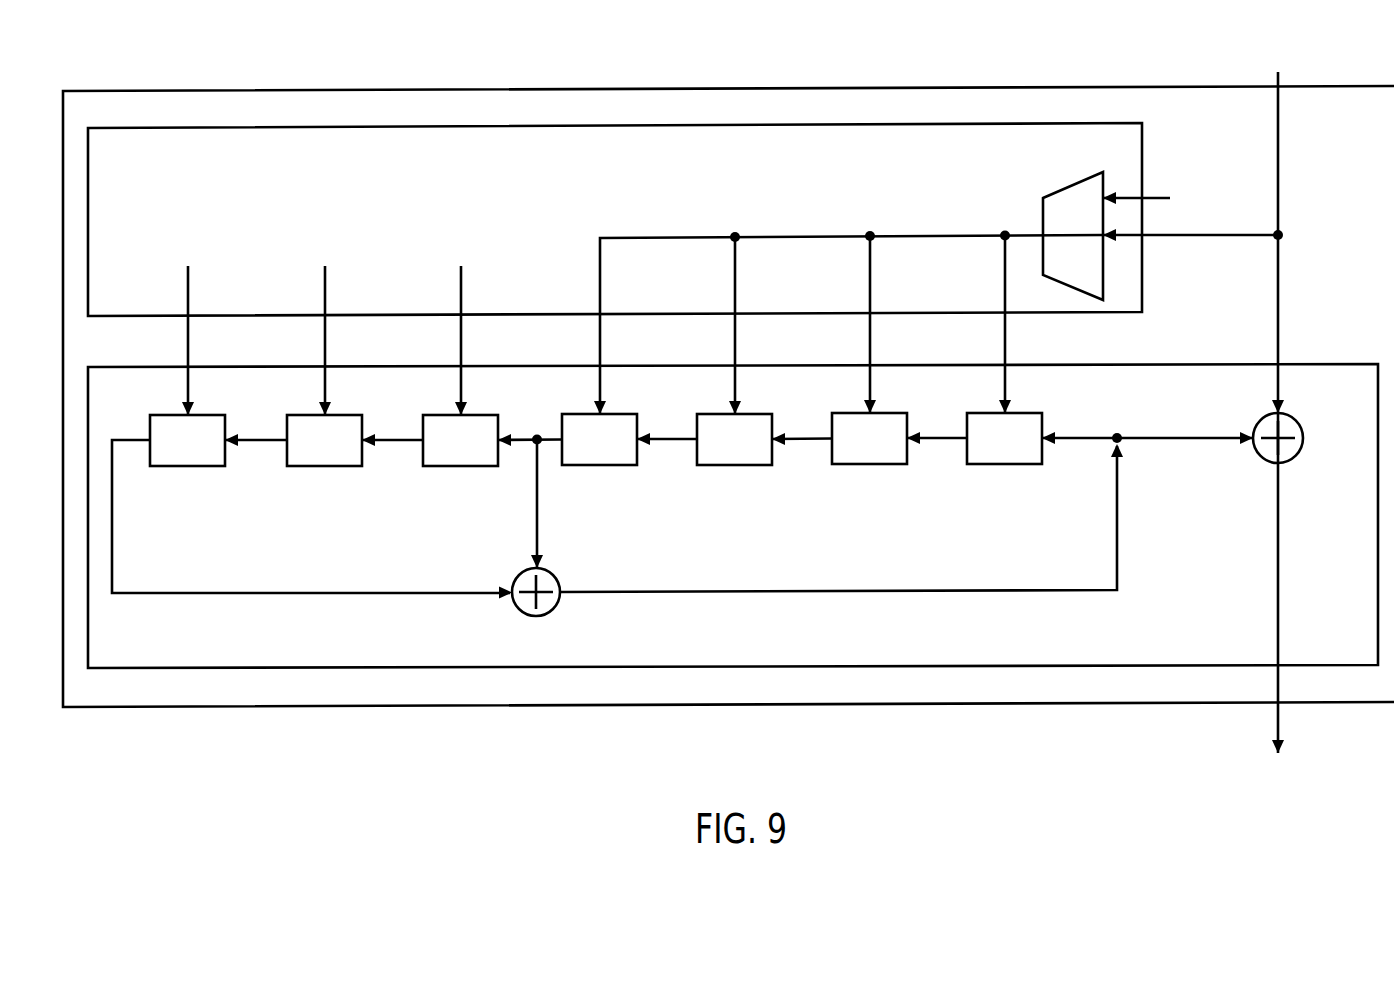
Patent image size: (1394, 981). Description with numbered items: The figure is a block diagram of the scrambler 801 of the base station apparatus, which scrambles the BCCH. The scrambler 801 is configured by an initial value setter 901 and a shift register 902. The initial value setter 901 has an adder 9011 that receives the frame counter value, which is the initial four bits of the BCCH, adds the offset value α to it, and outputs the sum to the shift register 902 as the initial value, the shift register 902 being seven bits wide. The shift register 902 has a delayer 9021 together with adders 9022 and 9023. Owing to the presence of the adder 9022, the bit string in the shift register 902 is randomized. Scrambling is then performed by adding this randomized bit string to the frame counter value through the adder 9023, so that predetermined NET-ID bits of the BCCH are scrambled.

The scrambler 801 is at (316, 91).
The initial value setter 901 is at (683, 269).
The adder 9011 is at (1043, 206).
The shift register 902 is at (733, 516).
The delayer 9021 is at (1042, 418).
The adder 9022 is at (553, 573).
The adder 9023 is at (1296, 422).